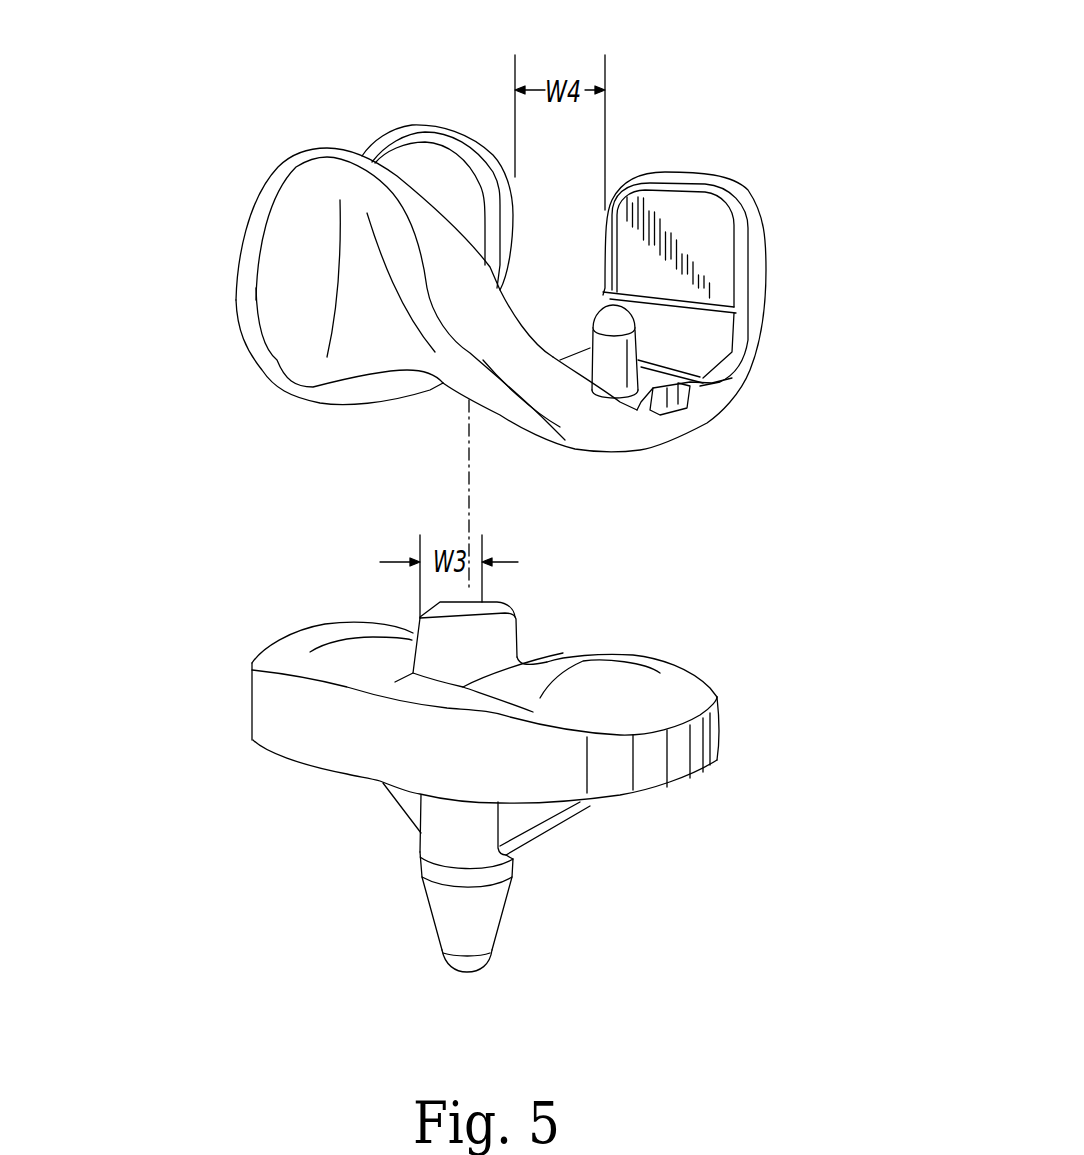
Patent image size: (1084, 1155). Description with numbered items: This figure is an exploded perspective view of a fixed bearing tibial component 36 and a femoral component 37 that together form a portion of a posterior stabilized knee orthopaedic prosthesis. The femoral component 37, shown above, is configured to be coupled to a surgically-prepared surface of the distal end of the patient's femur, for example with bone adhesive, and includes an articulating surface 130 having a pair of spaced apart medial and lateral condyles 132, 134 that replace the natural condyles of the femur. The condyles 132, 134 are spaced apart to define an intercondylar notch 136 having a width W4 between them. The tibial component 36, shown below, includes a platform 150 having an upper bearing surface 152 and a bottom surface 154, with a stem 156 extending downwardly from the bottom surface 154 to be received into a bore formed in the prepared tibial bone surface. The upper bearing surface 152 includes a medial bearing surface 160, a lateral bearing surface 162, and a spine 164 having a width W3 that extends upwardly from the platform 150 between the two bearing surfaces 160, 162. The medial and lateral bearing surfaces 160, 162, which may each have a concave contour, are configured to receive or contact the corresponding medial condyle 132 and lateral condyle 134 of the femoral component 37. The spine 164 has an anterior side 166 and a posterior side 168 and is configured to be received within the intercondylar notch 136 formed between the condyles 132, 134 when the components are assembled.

The tibial component 36 is at (722, 779).
The femoral component 37 is at (750, 157).
The articulating surface 130 is at (327, 422).
The medial condyle 132 is at (358, 407).
The lateral condyle 134 is at (610, 450).
The intercondylar notch 136 is at (443, 422).
The platform 150 is at (273, 710).
The upper bearing surface 152 is at (547, 663).
The bottom surface 154 is at (617, 802).
The stem 156 is at (487, 913).
The medial bearing surface 160 is at (337, 650).
The lateral bearing surface 162 is at (653, 677).
The spine 164 is at (490, 602).
The anterior side 166 is at (430, 663).
The posterior side 168 is at (520, 633).